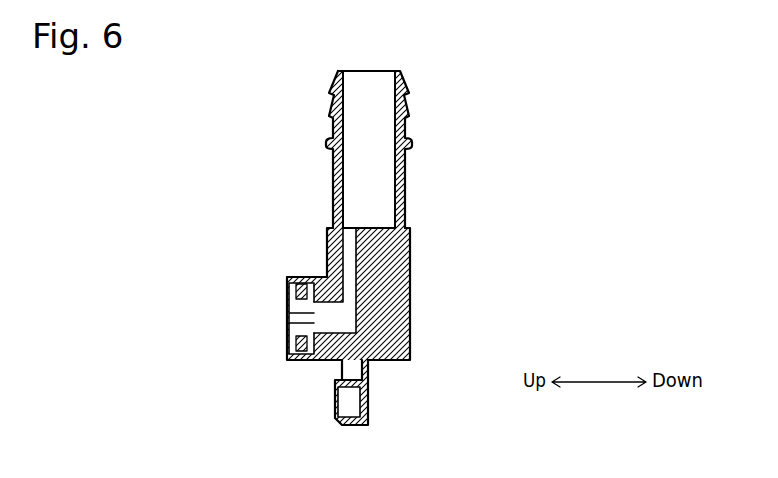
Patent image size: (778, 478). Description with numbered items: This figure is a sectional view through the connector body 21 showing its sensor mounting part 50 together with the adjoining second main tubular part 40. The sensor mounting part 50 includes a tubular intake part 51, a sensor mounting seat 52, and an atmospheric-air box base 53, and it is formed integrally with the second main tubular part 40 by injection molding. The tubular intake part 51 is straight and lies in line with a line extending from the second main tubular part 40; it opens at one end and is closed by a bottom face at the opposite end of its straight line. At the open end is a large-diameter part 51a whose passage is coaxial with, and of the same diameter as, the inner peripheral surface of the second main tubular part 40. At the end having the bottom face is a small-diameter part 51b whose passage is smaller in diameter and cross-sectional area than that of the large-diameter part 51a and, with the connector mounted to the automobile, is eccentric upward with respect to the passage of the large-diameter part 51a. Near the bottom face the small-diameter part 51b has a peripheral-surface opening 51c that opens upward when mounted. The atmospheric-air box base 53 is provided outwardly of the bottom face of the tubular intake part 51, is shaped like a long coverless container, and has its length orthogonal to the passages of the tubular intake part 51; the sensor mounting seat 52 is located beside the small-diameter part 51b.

The connector body 21 is at (411, 96).
The second main tubular part 40 is at (333, 134).
The sensor mounting part 50 is at (378, 245).
The tubular intake part 51 is at (393, 212).
The large-diameter part 51a is at (372, 150).
The small-diameter part 51b is at (410, 277).
The peripheral-surface opening 51c is at (337, 303).
The sensor mounting seat 52 is at (303, 277).
The atmospheric-air box base 53 is at (335, 393).